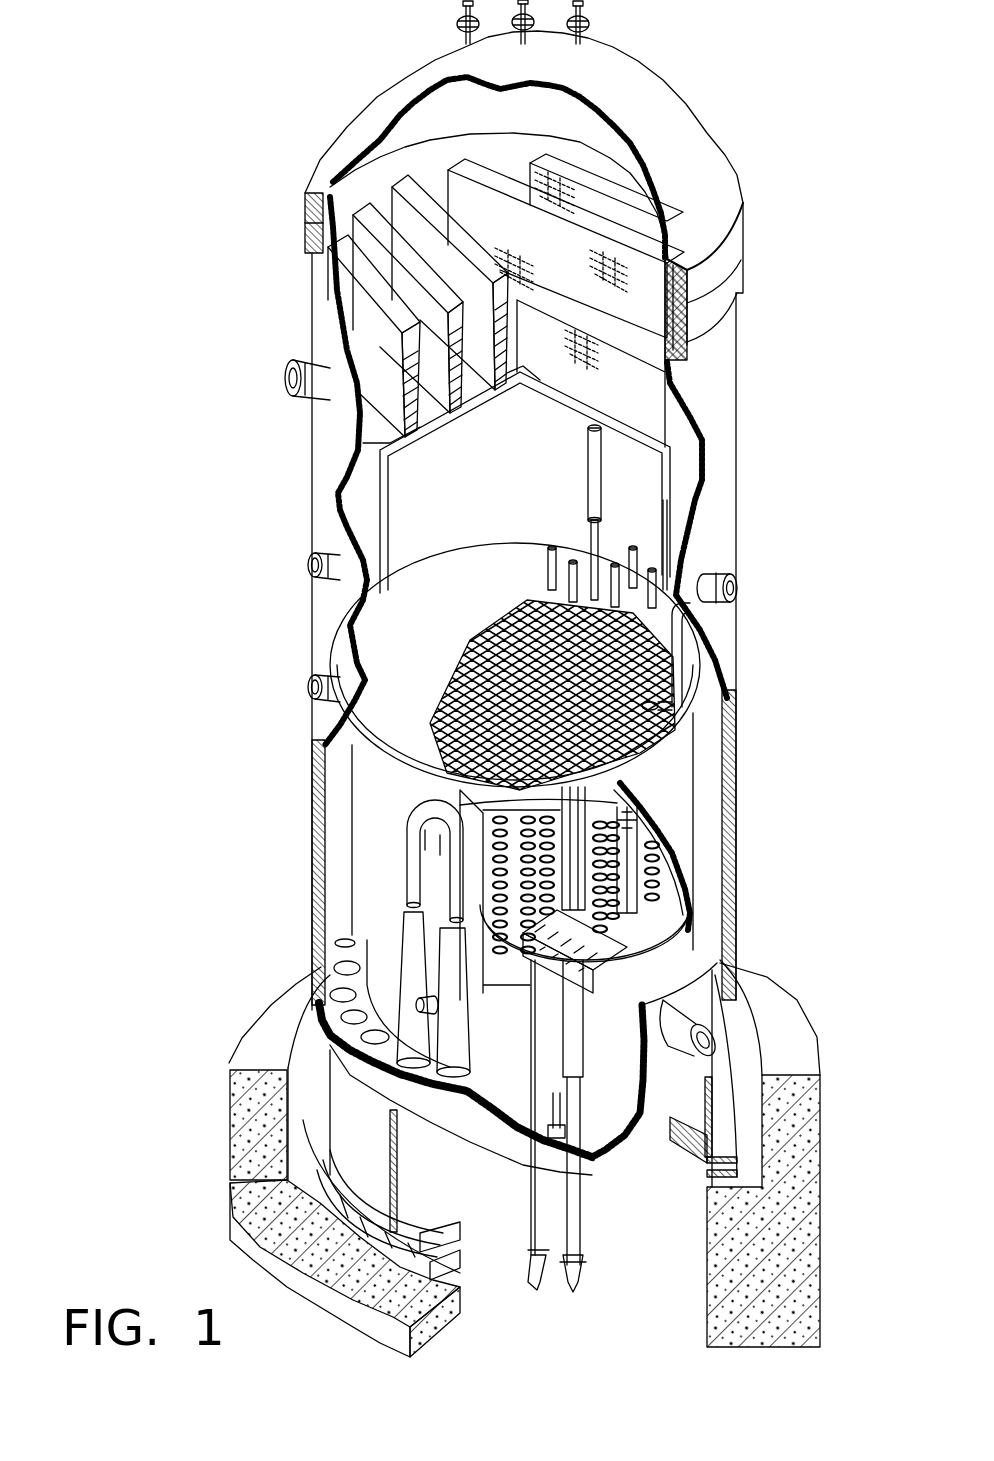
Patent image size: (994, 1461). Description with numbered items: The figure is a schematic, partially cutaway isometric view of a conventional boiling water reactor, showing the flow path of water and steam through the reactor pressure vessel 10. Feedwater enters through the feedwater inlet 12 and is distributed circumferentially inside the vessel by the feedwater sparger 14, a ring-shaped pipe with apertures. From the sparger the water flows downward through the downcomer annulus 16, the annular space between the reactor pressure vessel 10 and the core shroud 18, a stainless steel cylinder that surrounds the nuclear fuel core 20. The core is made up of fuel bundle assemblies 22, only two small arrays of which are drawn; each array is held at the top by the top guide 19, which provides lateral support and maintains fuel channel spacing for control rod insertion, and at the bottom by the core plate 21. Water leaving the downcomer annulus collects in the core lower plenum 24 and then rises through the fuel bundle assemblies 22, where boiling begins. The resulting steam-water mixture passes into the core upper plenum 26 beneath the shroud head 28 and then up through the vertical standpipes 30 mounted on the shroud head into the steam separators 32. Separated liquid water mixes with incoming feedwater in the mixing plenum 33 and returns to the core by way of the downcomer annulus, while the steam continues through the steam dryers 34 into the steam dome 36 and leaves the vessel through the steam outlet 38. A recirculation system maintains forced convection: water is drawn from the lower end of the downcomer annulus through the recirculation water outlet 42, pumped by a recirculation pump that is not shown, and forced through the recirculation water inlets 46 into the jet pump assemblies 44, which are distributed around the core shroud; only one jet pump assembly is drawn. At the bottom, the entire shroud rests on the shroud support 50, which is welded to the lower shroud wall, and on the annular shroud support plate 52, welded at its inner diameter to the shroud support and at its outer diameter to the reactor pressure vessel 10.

The reactor pressure vessel 10 is at (313, 905).
The feedwater inlet 12 is at (738, 594).
The feedwater sparger 14 is at (692, 600).
The downcomer annulus 16 is at (328, 876).
The core shroud 18 is at (365, 770).
The top guide 19 is at (672, 685).
The nuclear fuel core 20 is at (672, 803).
The core plate 21 is at (680, 870).
The fuel bundle assemblies 22 is at (603, 792).
The core lower plenum 24 is at (600, 1092).
The core upper plenum 26 is at (525, 602).
The shroud head 28 is at (468, 553).
The standpipes 30 is at (637, 560).
The steam separators 32 is at (592, 467).
The mixing plenum 33 is at (555, 484).
The steam dryers 34 is at (525, 320).
The steam dome 36 is at (437, 106).
The steam outlet 38 is at (302, 385).
The recirculation water outlet 42 is at (708, 1042).
The jet pump assemblies 44 is at (392, 856).
The recirculation water inlets 46 is at (436, 1006).
The shroud support 50 is at (375, 968).
The shroud support plate 52 is at (330, 982).